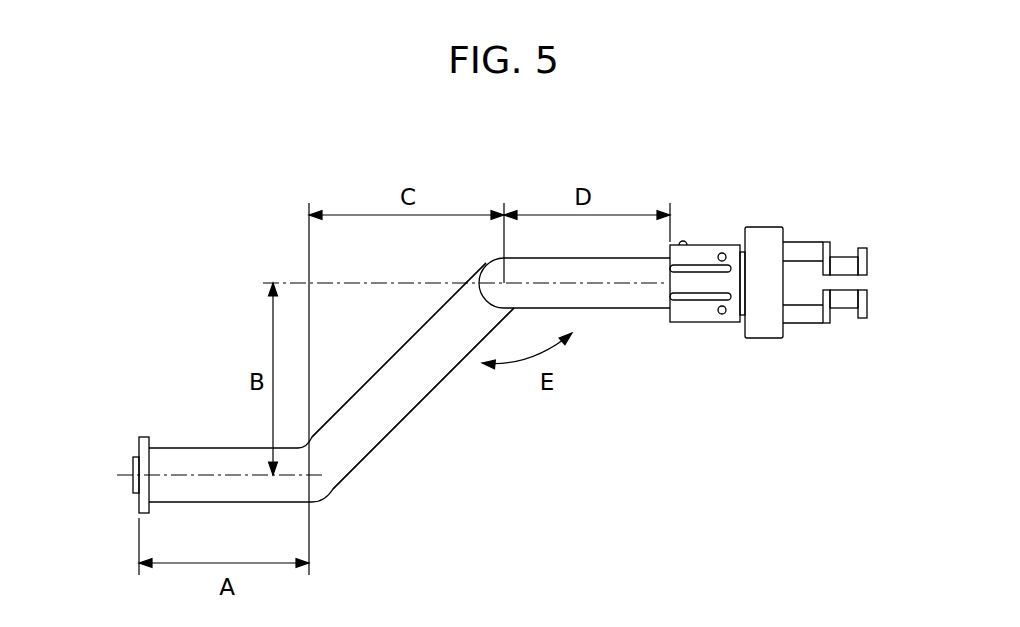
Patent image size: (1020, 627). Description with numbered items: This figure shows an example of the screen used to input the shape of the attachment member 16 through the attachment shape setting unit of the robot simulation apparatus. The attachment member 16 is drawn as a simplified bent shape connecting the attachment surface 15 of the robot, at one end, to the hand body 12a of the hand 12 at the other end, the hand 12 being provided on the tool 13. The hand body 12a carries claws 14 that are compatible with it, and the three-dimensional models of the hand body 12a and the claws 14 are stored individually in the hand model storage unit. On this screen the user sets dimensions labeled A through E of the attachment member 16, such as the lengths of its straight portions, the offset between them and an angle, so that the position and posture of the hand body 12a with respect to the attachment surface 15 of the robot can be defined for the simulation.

The hand 12 is at (740, 220).
The hand body 12a is at (768, 227).
The tool 13 is at (525, 430).
The claws 14 is at (840, 256).
The attachment surface 15 is at (139, 444).
The attachment member 16 is at (383, 442).